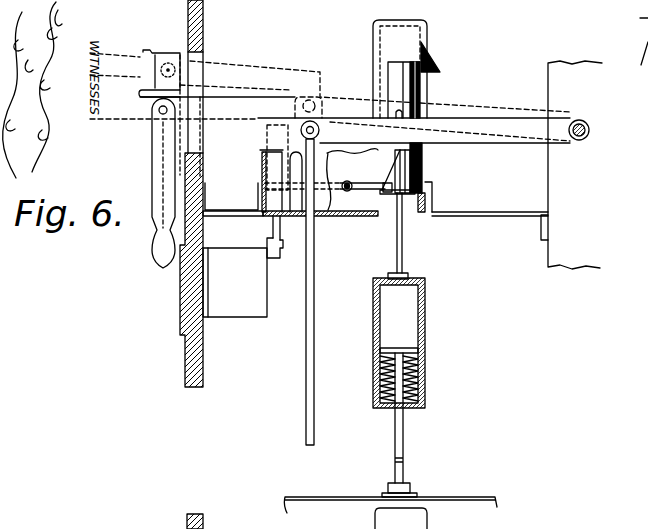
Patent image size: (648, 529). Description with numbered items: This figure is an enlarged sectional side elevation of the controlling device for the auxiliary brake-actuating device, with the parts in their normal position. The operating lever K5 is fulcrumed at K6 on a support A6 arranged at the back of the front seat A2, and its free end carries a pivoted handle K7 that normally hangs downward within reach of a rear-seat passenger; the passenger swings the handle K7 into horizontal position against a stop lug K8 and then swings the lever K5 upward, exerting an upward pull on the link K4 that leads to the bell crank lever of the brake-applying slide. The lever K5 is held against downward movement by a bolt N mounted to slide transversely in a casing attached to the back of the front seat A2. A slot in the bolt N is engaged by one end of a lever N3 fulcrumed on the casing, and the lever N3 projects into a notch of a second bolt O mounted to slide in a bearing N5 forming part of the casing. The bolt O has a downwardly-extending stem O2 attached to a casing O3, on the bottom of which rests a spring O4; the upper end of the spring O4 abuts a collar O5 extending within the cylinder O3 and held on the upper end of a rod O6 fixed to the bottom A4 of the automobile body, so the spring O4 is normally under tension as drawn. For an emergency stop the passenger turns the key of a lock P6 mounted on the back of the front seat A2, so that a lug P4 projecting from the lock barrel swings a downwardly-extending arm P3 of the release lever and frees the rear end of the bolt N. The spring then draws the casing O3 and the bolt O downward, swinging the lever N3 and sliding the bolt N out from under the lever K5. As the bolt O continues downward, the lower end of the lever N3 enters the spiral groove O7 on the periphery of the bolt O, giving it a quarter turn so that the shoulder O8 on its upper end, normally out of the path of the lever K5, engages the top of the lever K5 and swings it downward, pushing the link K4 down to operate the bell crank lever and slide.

The front seat A2 is at (205, 18).
The bottom of the automobile body A4 is at (485, 493).
The support A6 is at (402, 165).
The link K4 is at (306, 386).
The operating lever K5 is at (496, 125).
The fulcrum K6 is at (590, 128).
The pivoted handle K7 is at (167, 163).
The stop lug K8 is at (143, 82).
The bolt N is at (262, 166).
The lever N3 is at (352, 183).
The bearing N5 is at (374, 28).
The bolt O is at (426, 175).
The stem O2 is at (403, 247).
The casing O3 is at (435, 80).
The spring O4 is at (427, 382).
The collar O5 is at (380, 352).
The rod O6 is at (398, 448).
The spiral groove O7 is at (384, 191).
The shoulder O8 is at (428, 313).
The downwardly-extending arm P3 is at (272, 228).
The lug P4 is at (275, 259).
The lock P6 is at (225, 318).